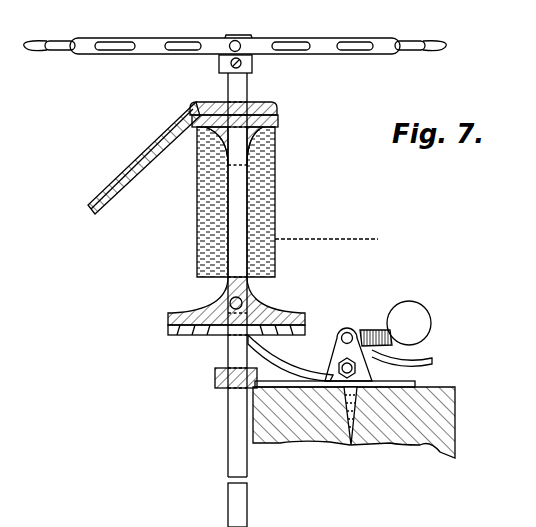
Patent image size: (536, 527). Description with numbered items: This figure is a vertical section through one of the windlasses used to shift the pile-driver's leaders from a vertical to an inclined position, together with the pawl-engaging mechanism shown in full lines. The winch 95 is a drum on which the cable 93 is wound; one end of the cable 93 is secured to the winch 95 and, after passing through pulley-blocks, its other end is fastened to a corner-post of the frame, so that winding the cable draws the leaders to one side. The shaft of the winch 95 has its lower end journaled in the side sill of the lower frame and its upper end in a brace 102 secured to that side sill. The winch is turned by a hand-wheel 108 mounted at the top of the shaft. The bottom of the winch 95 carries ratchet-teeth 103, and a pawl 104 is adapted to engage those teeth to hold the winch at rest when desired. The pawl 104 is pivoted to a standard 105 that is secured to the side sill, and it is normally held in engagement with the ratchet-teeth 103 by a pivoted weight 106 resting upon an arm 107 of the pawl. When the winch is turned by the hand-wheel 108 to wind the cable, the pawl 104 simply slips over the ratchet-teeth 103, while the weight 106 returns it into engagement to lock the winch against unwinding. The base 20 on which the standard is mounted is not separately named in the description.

The hand-wheel 108 is at (331, 54).
The cable 93 is at (328, 241).
The winch 95 is at (247, 189).
The brace 102 is at (112, 184).
The ratchet-teeth 103 is at (193, 339).
The pawl 104 is at (282, 362).
The standard 105 is at (348, 330).
The pivoted weight 106 is at (418, 318).
The arm 107 is at (424, 352).
The base block 20 is at (445, 421).